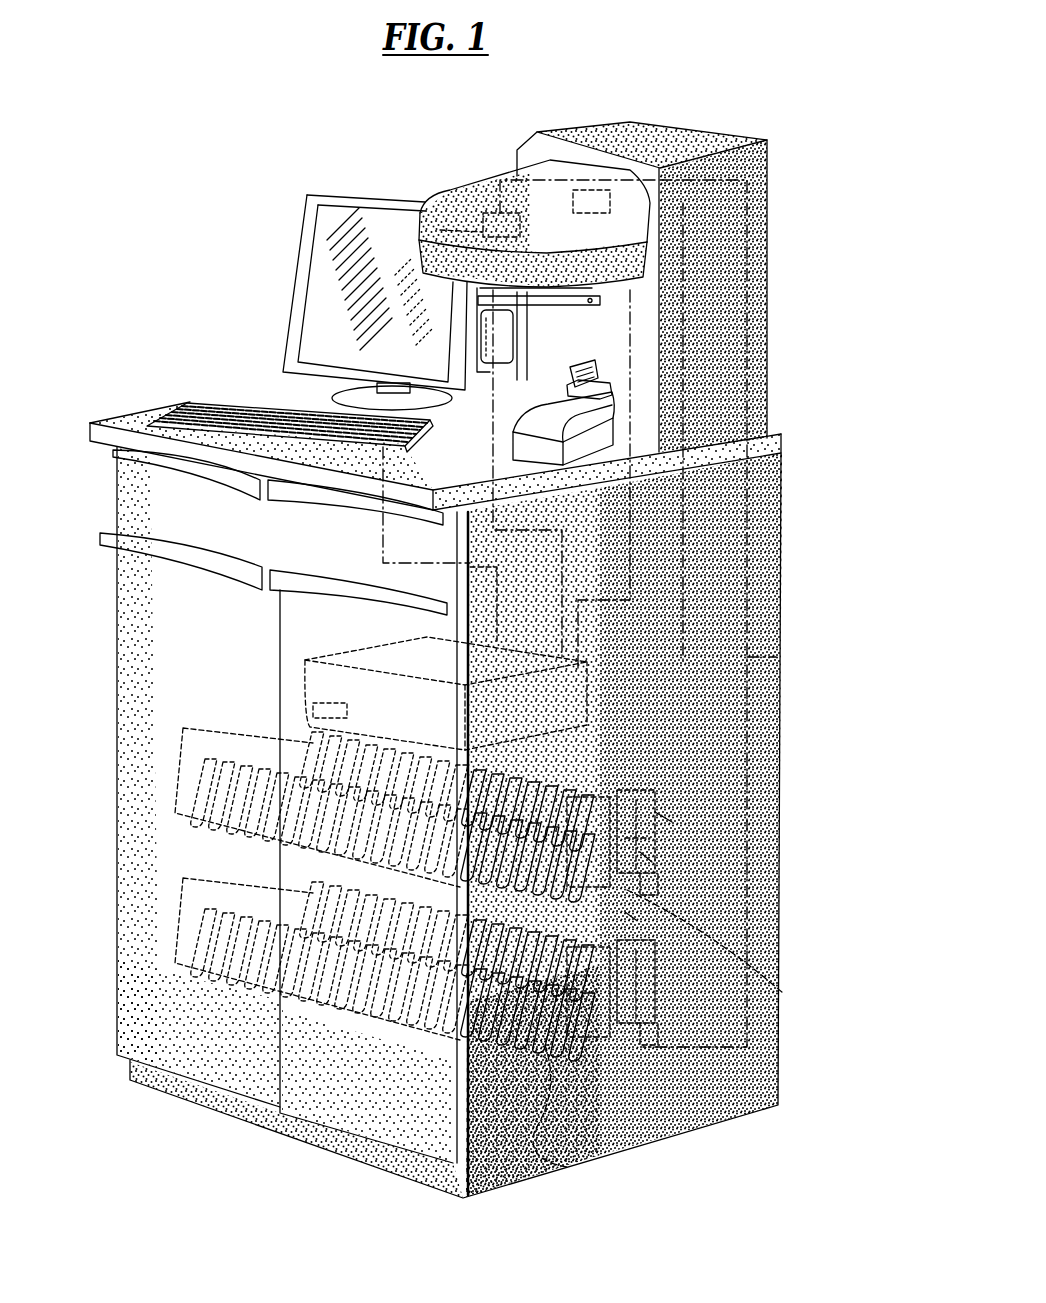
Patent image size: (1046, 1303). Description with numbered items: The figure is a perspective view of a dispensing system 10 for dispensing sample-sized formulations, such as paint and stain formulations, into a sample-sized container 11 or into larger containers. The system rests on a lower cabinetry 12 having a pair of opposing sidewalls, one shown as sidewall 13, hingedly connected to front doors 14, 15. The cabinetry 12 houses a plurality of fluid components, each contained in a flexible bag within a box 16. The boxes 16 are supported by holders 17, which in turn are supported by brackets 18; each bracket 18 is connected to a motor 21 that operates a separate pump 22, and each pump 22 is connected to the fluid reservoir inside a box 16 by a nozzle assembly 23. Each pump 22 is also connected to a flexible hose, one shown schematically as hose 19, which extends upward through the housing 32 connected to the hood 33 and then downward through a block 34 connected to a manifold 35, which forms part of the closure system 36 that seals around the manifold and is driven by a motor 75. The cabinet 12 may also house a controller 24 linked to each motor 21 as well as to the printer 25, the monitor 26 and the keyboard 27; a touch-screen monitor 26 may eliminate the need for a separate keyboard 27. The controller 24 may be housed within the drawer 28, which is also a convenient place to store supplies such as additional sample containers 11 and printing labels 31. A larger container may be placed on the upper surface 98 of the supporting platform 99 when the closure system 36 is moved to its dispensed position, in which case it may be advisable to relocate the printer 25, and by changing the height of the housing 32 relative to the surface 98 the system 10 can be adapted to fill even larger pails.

The dispensing system 10 is at (224, 240).
The sample-sized container 11 is at (497, 334).
The lower cabinetry 12 is at (795, 690).
The sidewall 13 is at (658, 1095).
The front door 14 is at (128, 977).
The front door 15 is at (350, 1110).
The box 16 is at (230, 740).
The holder 17 is at (784, 993).
The bracket 18 is at (624, 806).
The flexible hose 19 is at (784, 660).
The motor 21 is at (657, 822).
The pump 22 is at (643, 857).
The nozzle assembly 23 is at (627, 917).
The controller 24 is at (335, 652).
The printer 25 is at (605, 422).
The monitor 26 is at (340, 192).
The keyboard 27 is at (205, 402).
The drawer 28 is at (104, 507).
The printing labels 31 is at (590, 357).
The housing 32 is at (768, 308).
The hood 33 is at (483, 182).
The block 34 is at (440, 230).
The manifold 35 is at (478, 214).
The closure system 36 is at (610, 376).
The motor 75 is at (573, 205).
The upper surface 98 is at (458, 479).
The supporting platform 99 is at (121, 410).